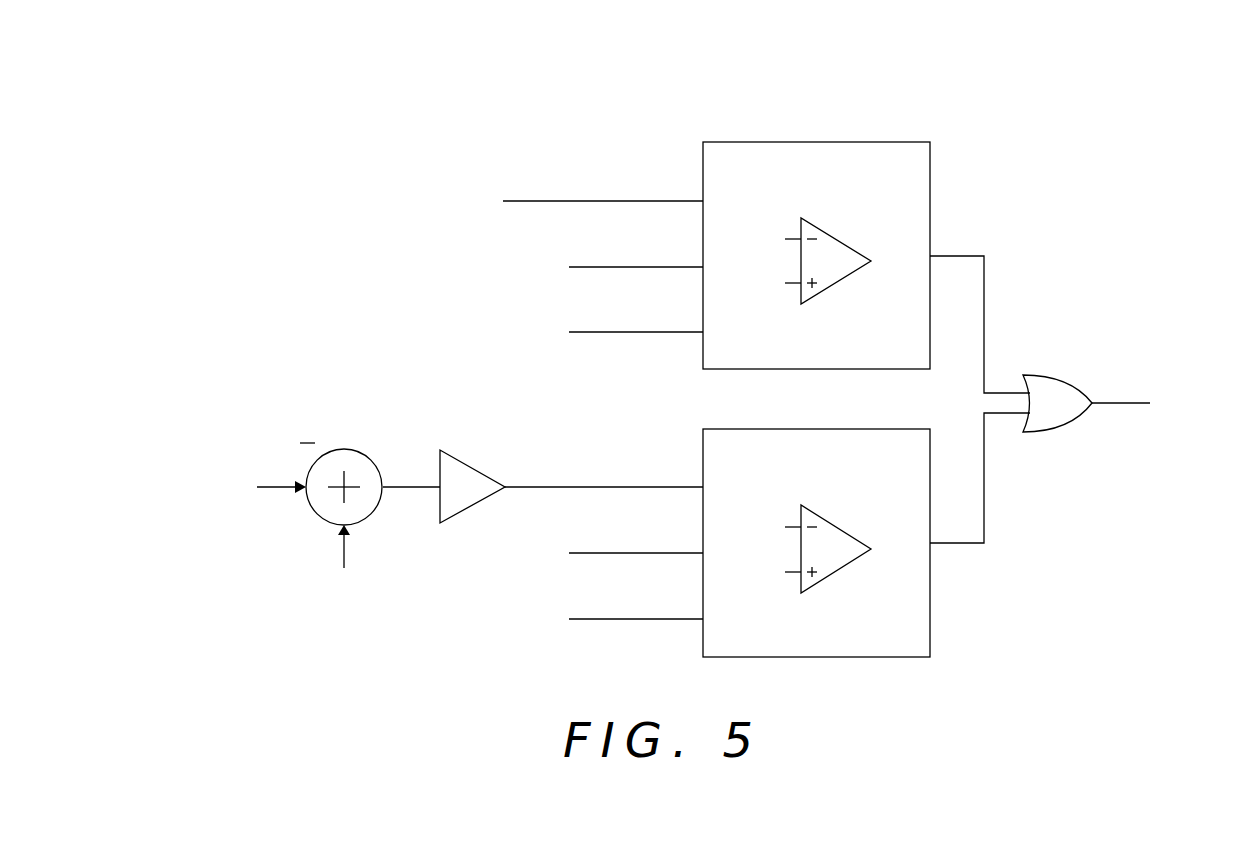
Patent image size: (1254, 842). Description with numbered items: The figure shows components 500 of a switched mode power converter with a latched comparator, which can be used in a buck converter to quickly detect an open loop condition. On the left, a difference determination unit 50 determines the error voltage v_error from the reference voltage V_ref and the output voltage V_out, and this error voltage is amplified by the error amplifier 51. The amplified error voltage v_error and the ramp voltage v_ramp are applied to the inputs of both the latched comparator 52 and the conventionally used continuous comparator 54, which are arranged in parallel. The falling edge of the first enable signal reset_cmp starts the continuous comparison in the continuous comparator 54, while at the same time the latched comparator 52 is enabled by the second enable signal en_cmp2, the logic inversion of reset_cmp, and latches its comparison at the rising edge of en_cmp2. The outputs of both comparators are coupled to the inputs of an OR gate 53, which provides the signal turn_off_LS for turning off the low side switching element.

The components of a switched mode power converter with a latched comparator 500 is at (535, 80).
The difference determination unit 50 is at (343, 448).
The error amplifier 51 is at (458, 512).
The latched comparator 52 is at (862, 142).
The OR gate 53 is at (1063, 382).
The continuous comparator 54 is at (860, 657).